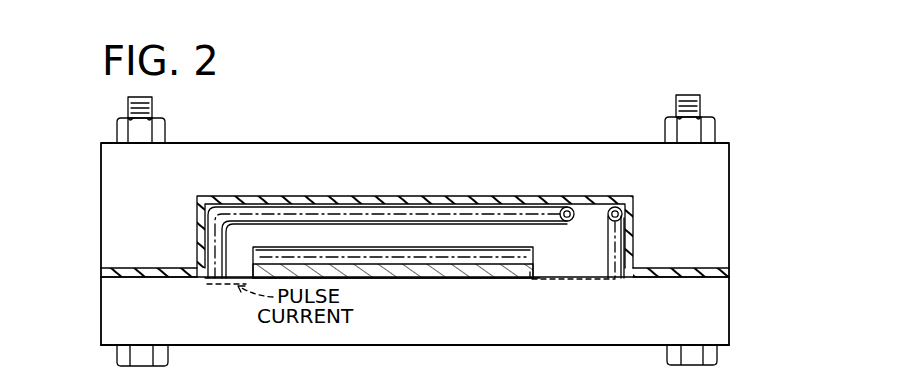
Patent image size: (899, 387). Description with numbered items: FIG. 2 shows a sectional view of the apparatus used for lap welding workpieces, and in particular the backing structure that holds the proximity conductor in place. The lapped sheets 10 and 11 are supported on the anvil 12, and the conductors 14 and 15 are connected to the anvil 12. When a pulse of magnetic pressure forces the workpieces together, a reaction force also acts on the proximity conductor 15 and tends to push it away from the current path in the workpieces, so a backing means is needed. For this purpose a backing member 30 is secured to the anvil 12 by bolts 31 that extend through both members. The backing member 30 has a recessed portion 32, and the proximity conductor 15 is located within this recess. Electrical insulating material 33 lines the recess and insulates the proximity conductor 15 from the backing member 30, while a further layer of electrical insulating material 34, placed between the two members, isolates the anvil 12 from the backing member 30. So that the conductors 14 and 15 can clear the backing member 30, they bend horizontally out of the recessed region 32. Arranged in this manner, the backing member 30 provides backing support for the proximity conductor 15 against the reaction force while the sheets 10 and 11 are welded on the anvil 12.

The backing member 30 is at (720, 162).
The anvil 12 is at (413, 334).
The bolts 31 is at (128, 106).
The electrical insulating material 33 is at (197, 212).
The electrical insulating material 34 is at (100, 271).
The recessed portion 32 is at (336, 228).
The proximity conductor 15 is at (515, 210).
The conductor 14 is at (620, 253).
The sheet 11 is at (535, 252).
The sheet 10 is at (525, 278).